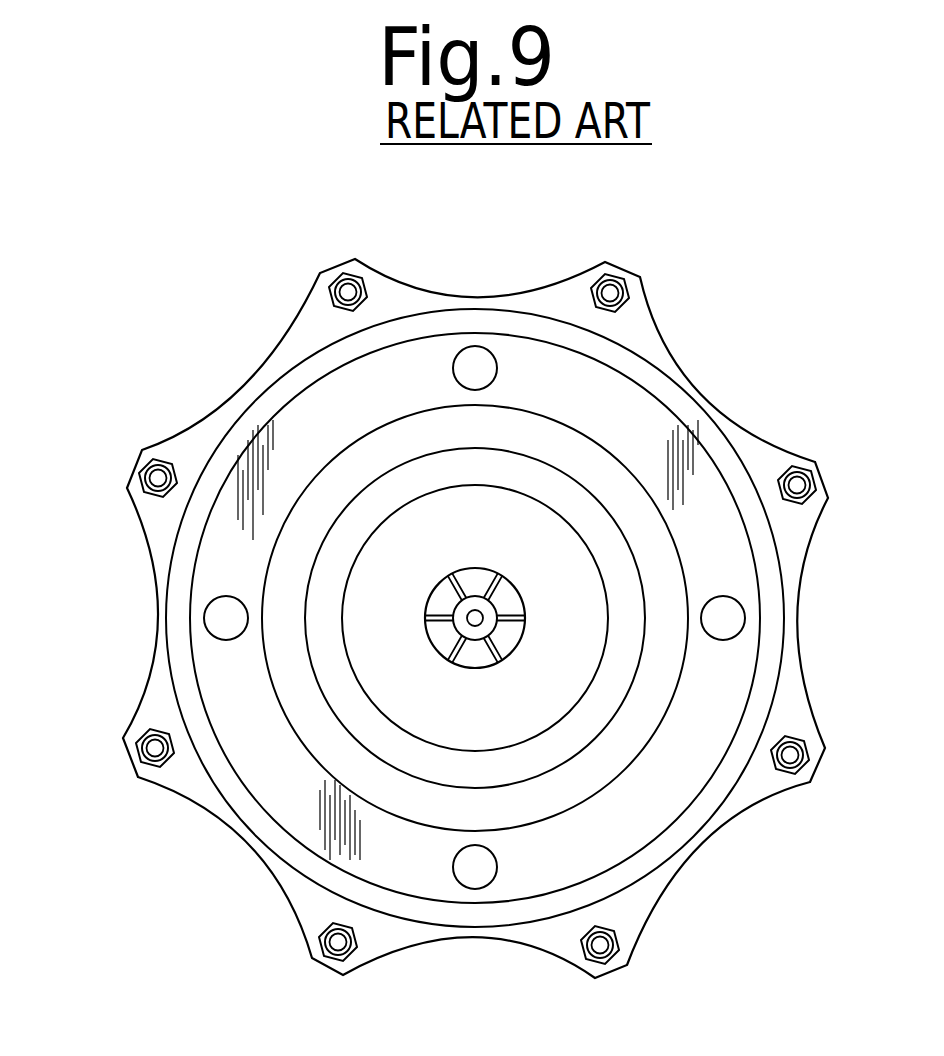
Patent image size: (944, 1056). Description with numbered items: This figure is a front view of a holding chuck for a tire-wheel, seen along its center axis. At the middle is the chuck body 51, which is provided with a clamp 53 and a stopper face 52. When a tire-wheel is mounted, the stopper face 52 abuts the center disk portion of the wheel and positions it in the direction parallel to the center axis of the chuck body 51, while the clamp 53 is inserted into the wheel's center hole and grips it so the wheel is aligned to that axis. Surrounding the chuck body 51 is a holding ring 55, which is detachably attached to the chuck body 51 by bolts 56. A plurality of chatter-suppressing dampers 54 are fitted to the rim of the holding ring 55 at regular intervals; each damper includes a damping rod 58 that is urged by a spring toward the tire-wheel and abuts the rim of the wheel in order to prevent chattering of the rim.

The chuck body 51 is at (345, 445).
The stopper face 52 is at (583, 685).
The clamp 53 is at (473, 662).
The chatter-suppressing damper 54 is at (785, 468).
The holding ring 55 is at (155, 522).
The bolt 56 is at (482, 355).
The damping rod 58 is at (800, 495).